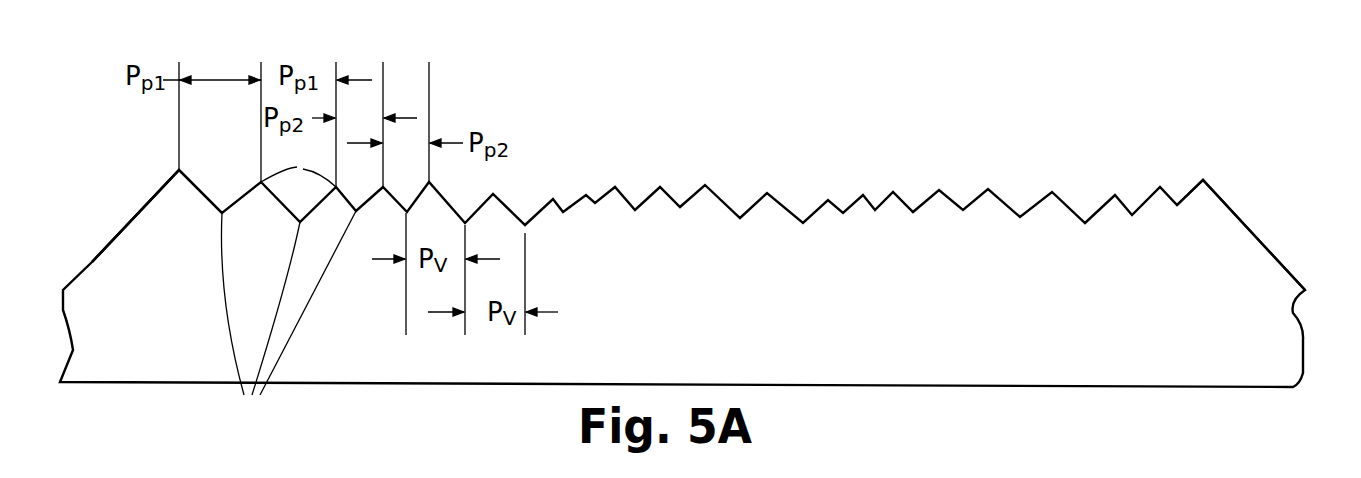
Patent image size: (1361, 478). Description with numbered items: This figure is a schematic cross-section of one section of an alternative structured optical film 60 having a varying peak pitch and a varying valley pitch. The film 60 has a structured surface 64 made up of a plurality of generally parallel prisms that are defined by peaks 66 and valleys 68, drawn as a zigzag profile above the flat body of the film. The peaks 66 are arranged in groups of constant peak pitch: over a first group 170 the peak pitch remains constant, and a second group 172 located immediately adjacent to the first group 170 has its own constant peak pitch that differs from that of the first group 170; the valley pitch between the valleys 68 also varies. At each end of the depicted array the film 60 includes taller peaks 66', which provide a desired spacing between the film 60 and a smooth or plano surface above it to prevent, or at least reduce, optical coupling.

The structured optical film 60 is at (1113, 167).
The structured surface 64 is at (1297, 177).
The peaks 66 is at (163, 199).
The taller peaks 66' is at (696, 215).
The valleys 68 is at (288, 318).
The first tooth group 170 is at (179, 53).
The second tooth group 172 is at (336, 53).